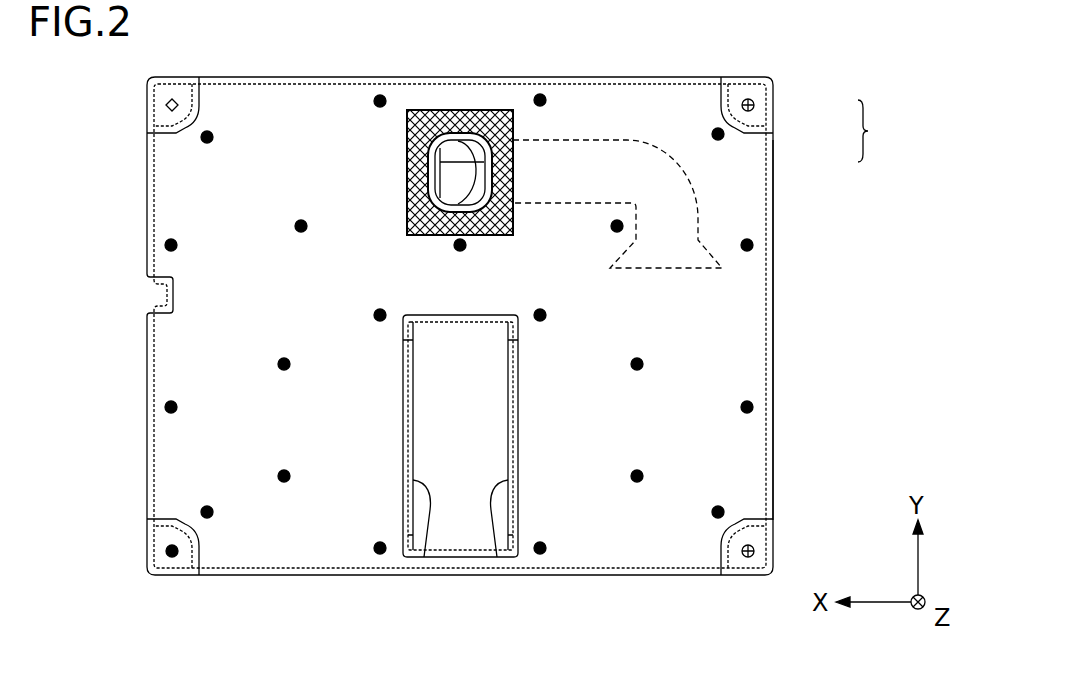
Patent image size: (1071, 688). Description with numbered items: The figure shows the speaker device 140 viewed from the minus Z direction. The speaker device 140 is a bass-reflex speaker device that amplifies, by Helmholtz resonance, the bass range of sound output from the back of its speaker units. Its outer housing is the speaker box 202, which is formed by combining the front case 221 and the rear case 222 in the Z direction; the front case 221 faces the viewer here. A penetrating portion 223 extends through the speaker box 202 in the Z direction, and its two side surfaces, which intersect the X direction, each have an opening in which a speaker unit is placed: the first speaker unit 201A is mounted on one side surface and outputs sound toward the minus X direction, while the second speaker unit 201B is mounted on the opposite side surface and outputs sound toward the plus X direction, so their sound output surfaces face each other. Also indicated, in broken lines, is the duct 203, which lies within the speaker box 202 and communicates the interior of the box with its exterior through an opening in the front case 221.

The speaker device 140 is at (275, 70).
The speaker box 202 is at (888, 131).
The front case 221 is at (757, 152).
The rear case 222 is at (760, 110).
The duct 203 is at (589, 140).
The penetrating portion 223 is at (503, 430).
The first speaker unit 201A is at (424, 557).
The second speaker unit 201B is at (497, 557).